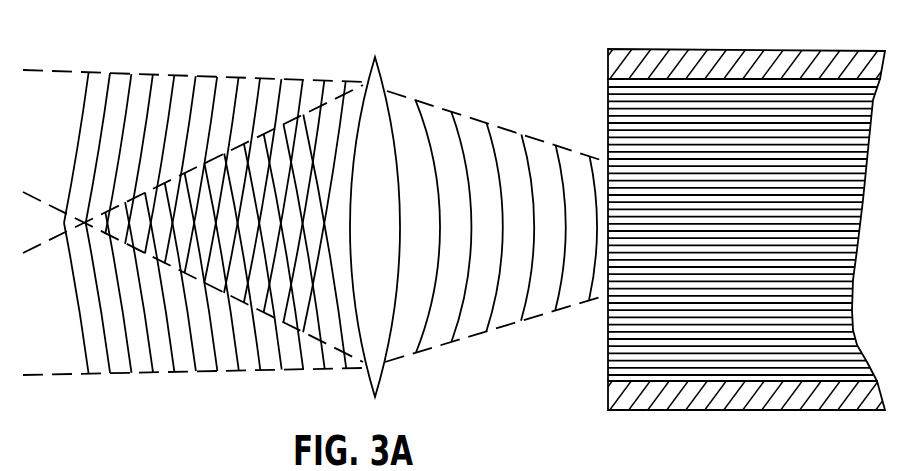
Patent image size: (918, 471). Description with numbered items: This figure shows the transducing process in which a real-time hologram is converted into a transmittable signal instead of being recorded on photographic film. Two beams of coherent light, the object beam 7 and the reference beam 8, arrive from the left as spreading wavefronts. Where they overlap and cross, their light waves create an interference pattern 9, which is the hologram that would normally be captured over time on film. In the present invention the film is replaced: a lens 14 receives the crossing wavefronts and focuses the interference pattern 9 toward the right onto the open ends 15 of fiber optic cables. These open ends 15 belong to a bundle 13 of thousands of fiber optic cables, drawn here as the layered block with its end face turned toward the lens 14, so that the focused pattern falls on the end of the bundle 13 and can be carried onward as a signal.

The object beam 7 is at (53, 88).
The reference beam 8 is at (53, 345).
The interference pattern 9 is at (283, 127).
The lens 14 is at (373, 57).
The open ends of fiber optic cables 15 is at (606, 338).
The bundle of fiber optic cables 13 is at (627, 412).